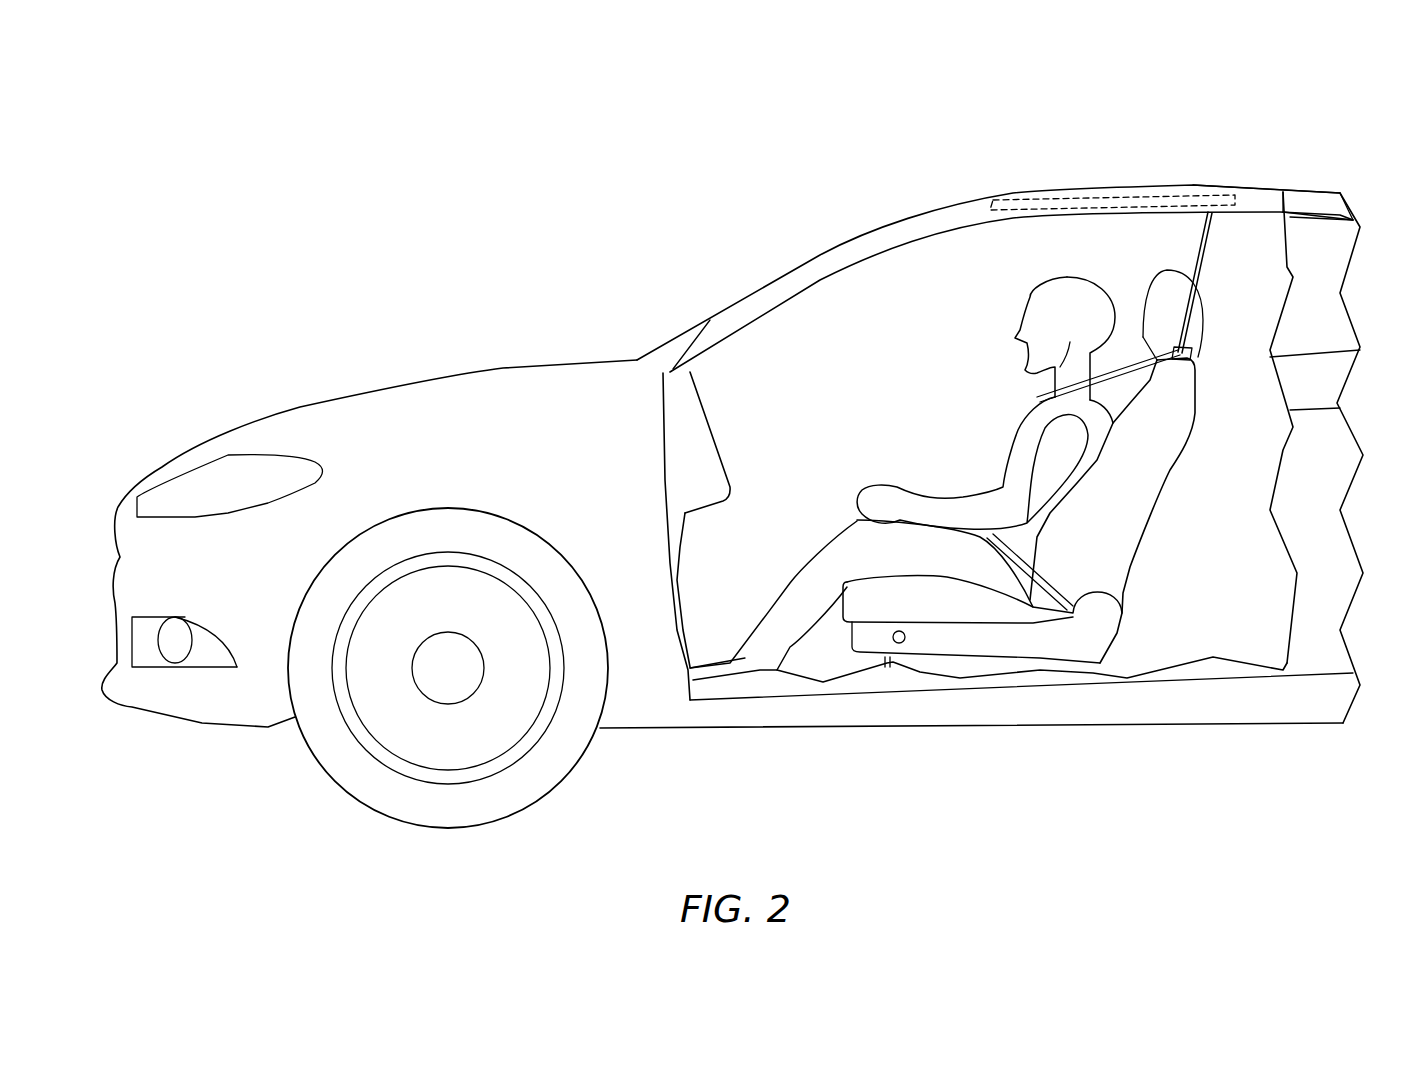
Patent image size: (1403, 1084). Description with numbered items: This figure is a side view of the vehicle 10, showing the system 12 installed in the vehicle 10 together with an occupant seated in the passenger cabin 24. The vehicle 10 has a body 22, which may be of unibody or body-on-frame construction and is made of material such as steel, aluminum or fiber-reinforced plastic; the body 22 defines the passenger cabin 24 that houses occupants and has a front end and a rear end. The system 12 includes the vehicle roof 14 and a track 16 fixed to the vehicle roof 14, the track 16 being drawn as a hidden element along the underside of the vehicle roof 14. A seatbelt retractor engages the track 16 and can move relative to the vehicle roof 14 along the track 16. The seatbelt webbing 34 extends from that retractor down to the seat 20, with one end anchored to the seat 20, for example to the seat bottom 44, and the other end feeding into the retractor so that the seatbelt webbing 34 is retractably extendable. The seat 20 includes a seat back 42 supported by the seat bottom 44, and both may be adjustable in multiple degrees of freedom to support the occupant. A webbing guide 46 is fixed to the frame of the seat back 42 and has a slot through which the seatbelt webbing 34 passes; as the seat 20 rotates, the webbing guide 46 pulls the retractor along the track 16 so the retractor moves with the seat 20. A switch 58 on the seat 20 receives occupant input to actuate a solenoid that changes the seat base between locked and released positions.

The vehicle 10 is at (1345, 130).
The system 12 is at (1208, 186).
The vehicle roof 14 is at (950, 203).
The track 16 is at (1098, 195).
The seat 20 is at (1216, 537).
The body 22 is at (512, 364).
The passenger cabin 24 is at (801, 336).
The seatbelt webbing 34 is at (1205, 268).
The seat back 42 is at (1163, 478).
The seat bottom 44 is at (875, 605).
The webbing guide 46 is at (1190, 352).
The switch 58 is at (899, 645).